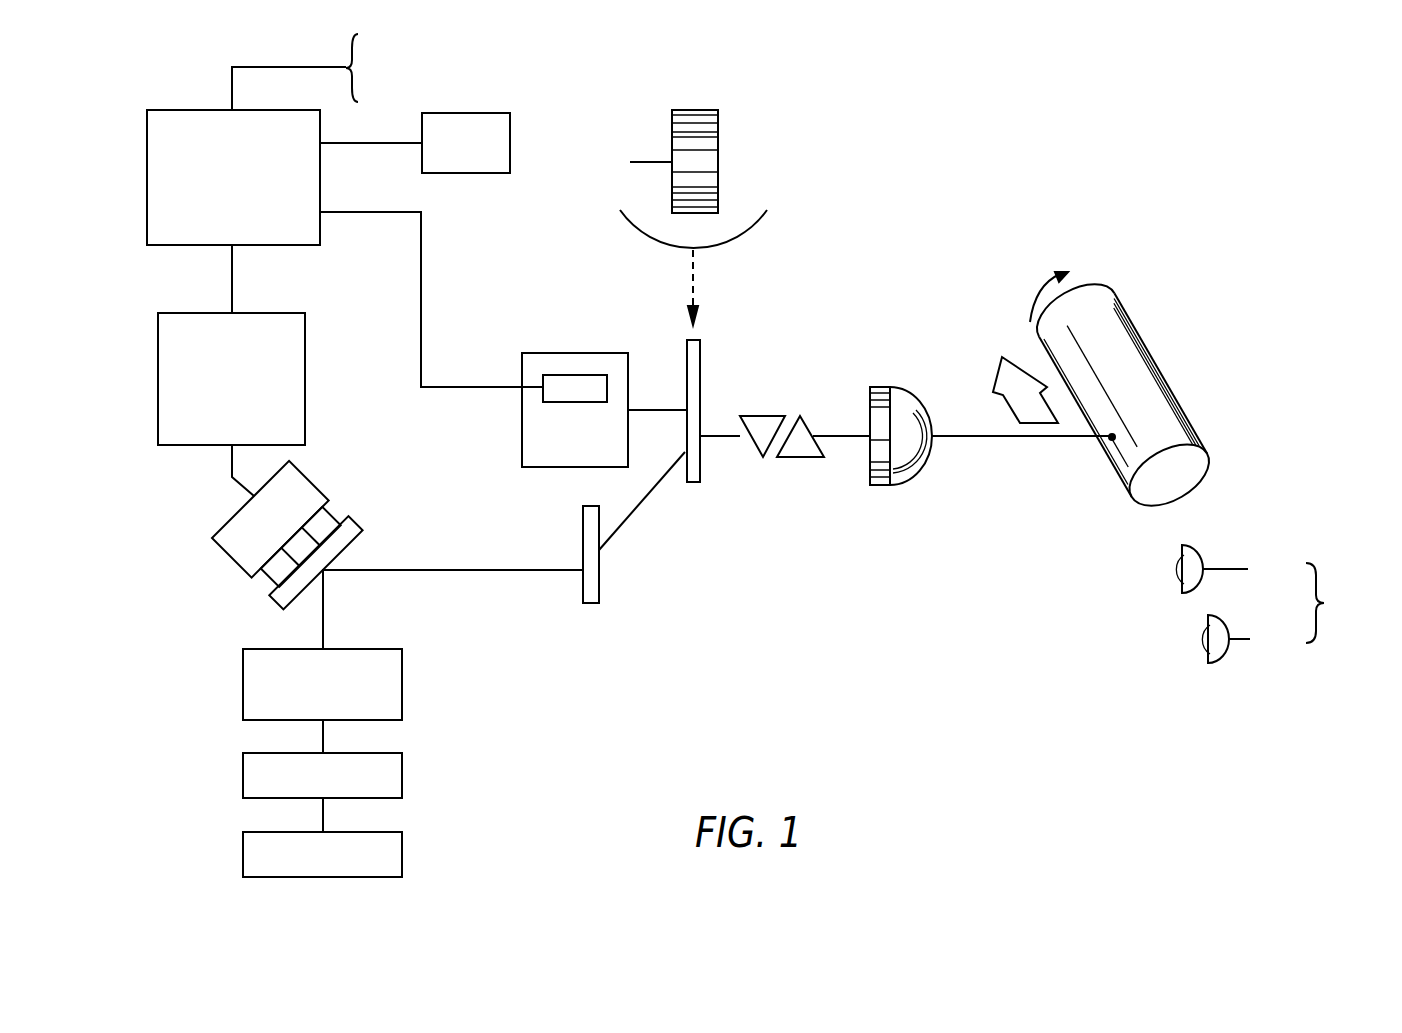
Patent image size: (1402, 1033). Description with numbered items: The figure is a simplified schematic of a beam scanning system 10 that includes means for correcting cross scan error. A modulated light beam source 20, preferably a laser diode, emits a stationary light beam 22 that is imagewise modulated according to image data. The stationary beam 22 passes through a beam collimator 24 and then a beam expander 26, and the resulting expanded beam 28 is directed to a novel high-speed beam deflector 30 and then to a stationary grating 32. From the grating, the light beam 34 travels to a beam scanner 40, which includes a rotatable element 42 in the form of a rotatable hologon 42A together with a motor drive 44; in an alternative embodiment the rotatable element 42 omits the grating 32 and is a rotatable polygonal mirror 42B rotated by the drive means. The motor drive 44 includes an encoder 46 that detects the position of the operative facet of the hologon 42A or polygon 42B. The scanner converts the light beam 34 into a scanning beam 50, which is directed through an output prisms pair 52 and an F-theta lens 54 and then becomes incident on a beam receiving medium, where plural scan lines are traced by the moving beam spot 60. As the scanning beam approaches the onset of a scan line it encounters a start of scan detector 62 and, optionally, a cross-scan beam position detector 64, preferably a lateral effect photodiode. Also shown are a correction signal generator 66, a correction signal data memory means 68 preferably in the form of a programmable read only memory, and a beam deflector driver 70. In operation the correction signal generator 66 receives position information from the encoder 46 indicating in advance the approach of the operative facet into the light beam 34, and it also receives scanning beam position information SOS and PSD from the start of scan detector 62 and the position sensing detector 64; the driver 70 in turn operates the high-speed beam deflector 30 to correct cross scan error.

The beam scanning system 10 is at (860, 665).
The modulated light beam source 20 is at (243, 855).
The stationary light beam 22 is at (323, 815).
The beam collimator 24 is at (243, 775).
The beam expander 26 is at (243, 681).
The expanded beam 28 is at (325, 620).
The high-speed beam deflector 30 is at (215, 517).
The stationary grating 32 is at (599, 590).
The light beam 34 is at (640, 505).
The beam scanner 40 is at (569, 385).
The rotatable element 42 is at (748, 287).
The rotatable hologon 42A is at (744, 408).
The rotatable polygonal mirror 42B is at (718, 113).
The motor drive 44 is at (522, 440).
The encoder 46 is at (577, 408).
The scanning beam 50 is at (970, 437).
The output prisms pair 52 is at (798, 402).
The F-theta lens 54 is at (887, 388).
The moving beam spot 60 is at (1110, 440).
The start of scan detector 62 is at (1190, 545).
The cross-scan beam position detector 64 is at (1218, 663).
The correction signal generator 66 is at (147, 247).
The correction signal data memory means 68 is at (510, 120).
The beam deflector driver 70 is at (158, 333).